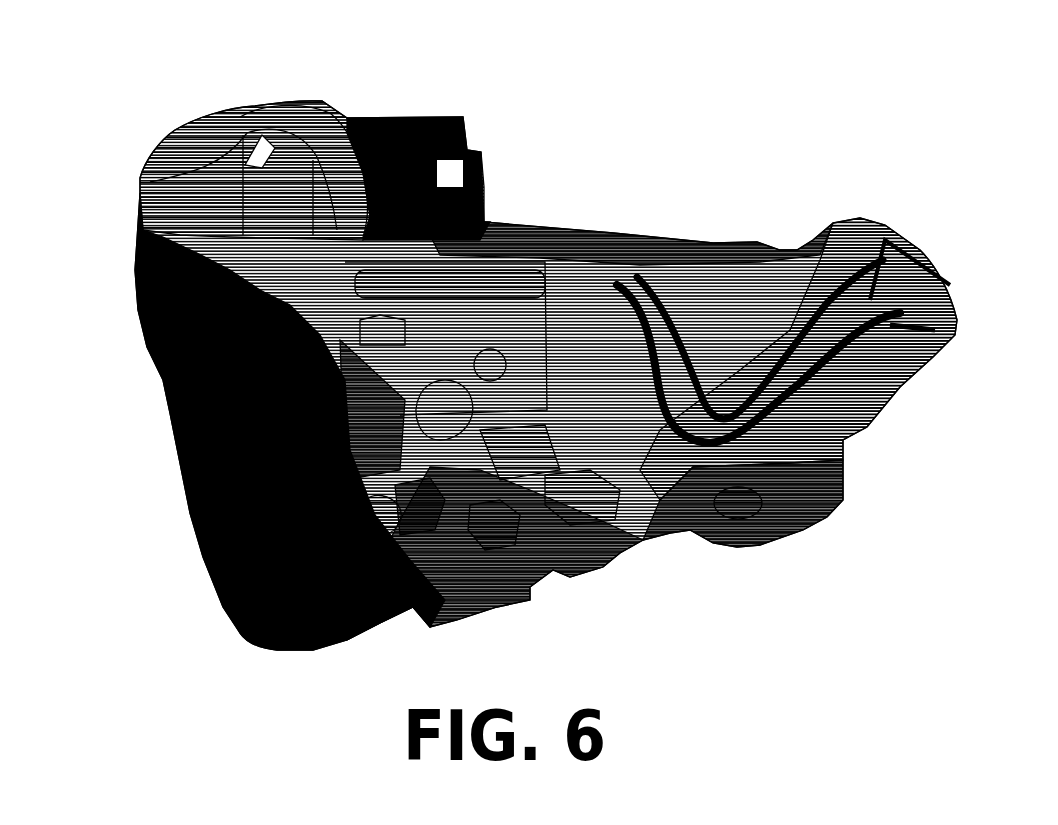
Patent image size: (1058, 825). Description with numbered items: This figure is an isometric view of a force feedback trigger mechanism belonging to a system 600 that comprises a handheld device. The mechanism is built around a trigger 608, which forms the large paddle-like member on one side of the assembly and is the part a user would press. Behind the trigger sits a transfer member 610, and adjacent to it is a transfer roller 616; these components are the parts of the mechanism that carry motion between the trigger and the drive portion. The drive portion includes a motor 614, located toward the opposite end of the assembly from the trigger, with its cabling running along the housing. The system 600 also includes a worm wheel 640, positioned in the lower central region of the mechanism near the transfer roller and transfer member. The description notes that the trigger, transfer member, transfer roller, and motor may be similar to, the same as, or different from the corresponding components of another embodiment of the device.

The system 600 is at (156, 66).
The trigger 608 is at (213, 413).
The transfer member 610 is at (400, 500).
The motor 614 is at (822, 260).
The transfer roller 616 is at (483, 520).
The worm wheel 640 is at (553, 490).